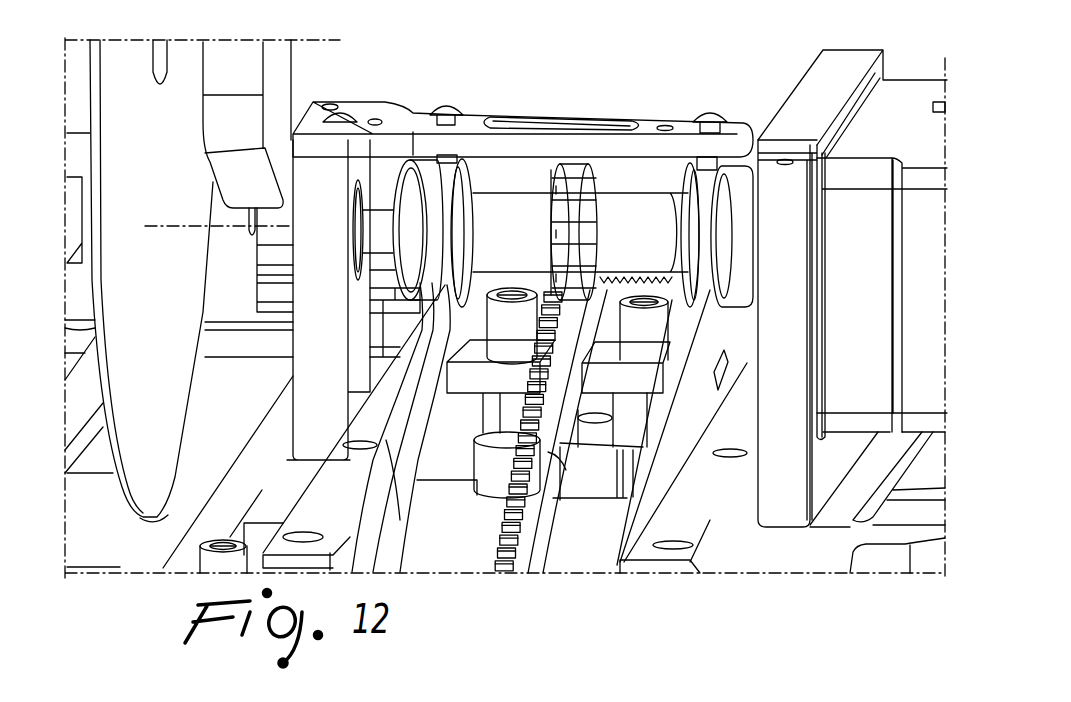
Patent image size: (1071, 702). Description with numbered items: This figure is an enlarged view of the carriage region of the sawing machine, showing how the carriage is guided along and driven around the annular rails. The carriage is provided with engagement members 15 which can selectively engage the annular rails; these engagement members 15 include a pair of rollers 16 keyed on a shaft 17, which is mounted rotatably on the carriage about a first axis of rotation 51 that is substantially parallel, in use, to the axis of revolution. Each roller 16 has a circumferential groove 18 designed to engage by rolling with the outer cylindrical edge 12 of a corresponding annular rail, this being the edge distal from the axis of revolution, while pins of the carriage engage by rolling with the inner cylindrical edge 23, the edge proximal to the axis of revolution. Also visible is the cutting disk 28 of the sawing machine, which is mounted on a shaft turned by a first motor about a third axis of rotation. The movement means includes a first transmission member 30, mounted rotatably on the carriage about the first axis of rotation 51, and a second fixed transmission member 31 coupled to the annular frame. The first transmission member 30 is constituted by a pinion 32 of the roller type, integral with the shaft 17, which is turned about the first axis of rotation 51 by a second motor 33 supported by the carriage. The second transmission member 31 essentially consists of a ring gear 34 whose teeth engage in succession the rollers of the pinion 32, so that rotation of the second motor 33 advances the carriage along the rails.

The outer cylindrical edge 12 is at (363, 487).
The engagement members 15 is at (440, 309).
The roller 16 is at (475, 178).
The shaft 17 is at (640, 222).
The circumferential groove 18 is at (438, 223).
The inner cylindrical edge 23 is at (410, 520).
The cutting disk 28 is at (148, 455).
The first transmission member 30 is at (545, 183).
The second fixed transmission member 31 is at (547, 535).
The pinion 32 is at (578, 183).
The second motor 33 is at (902, 112).
The ring gear 34 is at (550, 450).
The first axis of rotation 51 is at (180, 220).